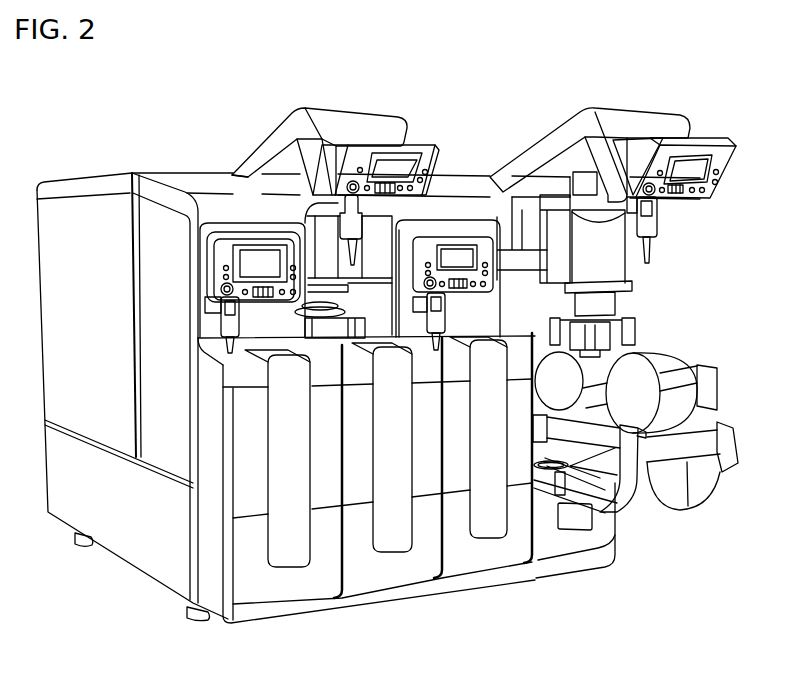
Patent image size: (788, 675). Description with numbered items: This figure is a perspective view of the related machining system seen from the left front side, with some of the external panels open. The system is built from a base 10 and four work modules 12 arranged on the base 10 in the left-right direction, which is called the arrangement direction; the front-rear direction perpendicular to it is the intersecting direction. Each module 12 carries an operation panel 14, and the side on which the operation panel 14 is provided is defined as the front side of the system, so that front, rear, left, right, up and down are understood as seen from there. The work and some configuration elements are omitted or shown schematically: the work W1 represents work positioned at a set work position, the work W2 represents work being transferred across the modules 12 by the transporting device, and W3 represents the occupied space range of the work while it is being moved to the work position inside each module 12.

The base 10 is at (119, 577).
The work module 12 is at (126, 148).
The operation panel 14 is at (259, 242).
The work W1 is at (547, 397).
The work W2 is at (547, 478).
The occupied space range of work W3 is at (671, 366).